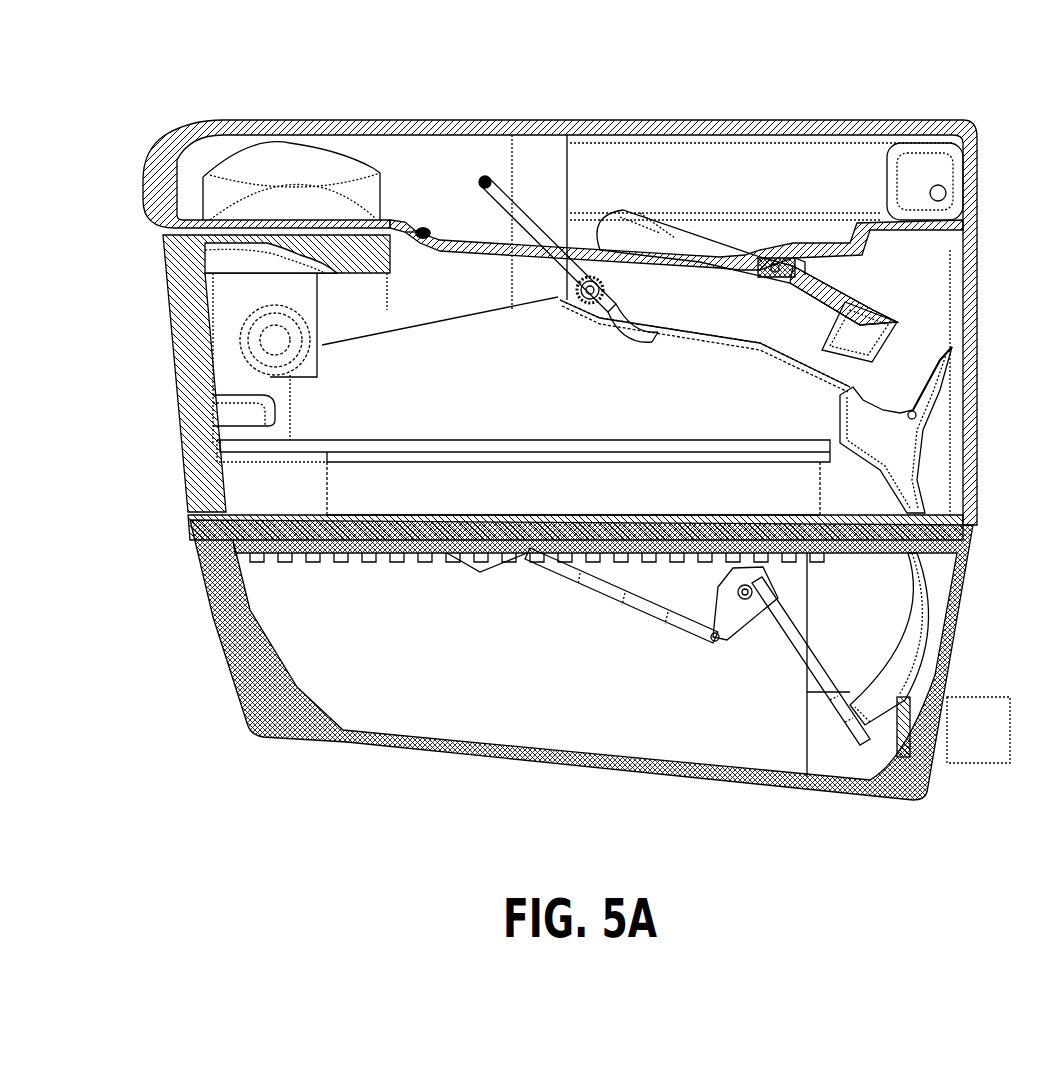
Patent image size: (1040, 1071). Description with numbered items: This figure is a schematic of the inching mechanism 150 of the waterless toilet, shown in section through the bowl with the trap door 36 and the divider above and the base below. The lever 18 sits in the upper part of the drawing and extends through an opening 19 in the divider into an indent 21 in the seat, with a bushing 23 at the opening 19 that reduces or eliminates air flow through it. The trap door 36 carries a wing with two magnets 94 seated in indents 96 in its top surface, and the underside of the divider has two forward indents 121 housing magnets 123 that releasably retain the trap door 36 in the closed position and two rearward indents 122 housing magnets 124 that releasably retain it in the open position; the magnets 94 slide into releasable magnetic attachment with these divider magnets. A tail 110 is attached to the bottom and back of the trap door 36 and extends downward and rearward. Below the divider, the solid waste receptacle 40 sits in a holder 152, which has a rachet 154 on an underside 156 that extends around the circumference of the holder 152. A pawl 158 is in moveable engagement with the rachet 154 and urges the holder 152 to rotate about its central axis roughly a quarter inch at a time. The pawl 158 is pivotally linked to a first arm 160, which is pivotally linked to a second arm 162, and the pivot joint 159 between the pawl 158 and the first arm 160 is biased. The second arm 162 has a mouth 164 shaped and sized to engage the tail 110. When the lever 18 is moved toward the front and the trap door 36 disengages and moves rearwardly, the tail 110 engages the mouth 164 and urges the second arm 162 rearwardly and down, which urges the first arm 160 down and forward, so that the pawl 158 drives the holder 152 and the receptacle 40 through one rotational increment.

The lever 18 is at (520, 212).
The opening 19 is at (445, 260).
The indent 21 is at (975, 367).
The bushing 23 is at (423, 227).
The trap door 36 is at (700, 313).
The solid waste receptacle 40 is at (525, 480).
The magnets 94 is at (770, 287).
The indents 96 is at (773, 280).
The tail 110 is at (892, 347).
The forward indents 121 is at (423, 237).
The rearward indents 122 is at (773, 258).
The magnets 123 is at (424, 228).
The magnets 124 is at (790, 255).
The inching mechanism 150 is at (932, 446).
The holder 152 is at (735, 520).
The rachet 154 is at (690, 553).
The underside 156 is at (580, 555).
The pawl 158 is at (586, 600).
The pivot joint 159 is at (745, 605).
The first arm 160 is at (797, 632).
The second arm 162 is at (930, 597).
The mouth 164 is at (920, 365).